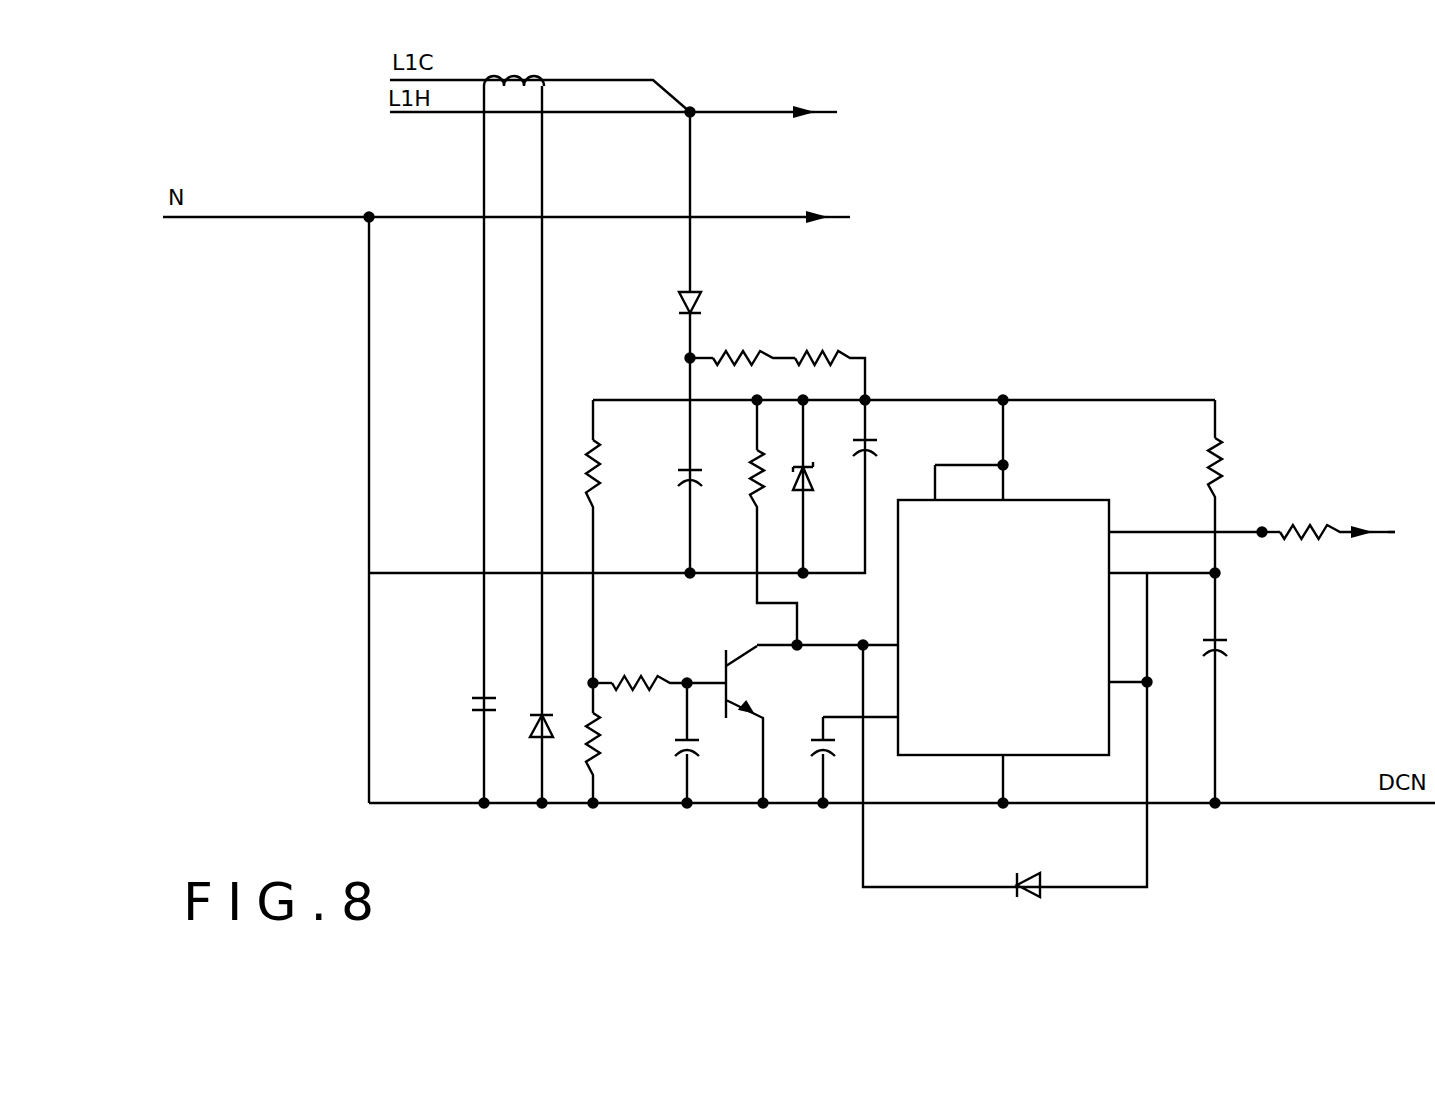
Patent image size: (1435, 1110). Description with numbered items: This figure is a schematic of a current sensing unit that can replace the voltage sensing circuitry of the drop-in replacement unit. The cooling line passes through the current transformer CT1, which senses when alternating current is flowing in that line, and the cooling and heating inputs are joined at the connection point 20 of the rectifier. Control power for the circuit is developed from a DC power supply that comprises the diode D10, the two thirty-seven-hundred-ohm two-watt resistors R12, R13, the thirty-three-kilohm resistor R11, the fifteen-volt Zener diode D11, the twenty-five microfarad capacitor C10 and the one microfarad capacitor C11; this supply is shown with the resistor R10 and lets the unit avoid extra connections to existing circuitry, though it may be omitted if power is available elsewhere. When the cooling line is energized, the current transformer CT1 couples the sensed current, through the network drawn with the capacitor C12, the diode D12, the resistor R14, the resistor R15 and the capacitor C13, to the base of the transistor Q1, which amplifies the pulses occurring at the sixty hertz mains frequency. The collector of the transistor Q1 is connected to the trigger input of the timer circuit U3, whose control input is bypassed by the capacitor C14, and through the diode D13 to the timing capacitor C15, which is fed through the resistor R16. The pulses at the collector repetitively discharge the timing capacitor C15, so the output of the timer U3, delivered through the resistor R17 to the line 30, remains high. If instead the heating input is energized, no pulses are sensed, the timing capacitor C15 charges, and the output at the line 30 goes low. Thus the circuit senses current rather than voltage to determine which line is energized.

The input 20 is at (709, 189).
The line 30 is at (1408, 532).
The current transformer CT1 is at (531, 64).
The diode D10 is at (647, 427).
The resistor R12 is at (742, 354).
The resistor R13 is at (830, 355).
The resistor R10 is at (572, 541).
The capacitor C10 is at (662, 485).
The resistor R11 is at (752, 522).
The Zener diode D11 is at (824, 486).
The capacitor C11 is at (890, 440).
The 555 timer U3 is at (1009, 601).
The resistor R16 is at (1247, 601).
The resistor R17 is at (1328, 532).
The timing capacitor C15 is at (1248, 652).
The capacitor C12 is at (457, 695).
The diode D12 is at (523, 820).
The resistor R15 is at (619, 743).
The resistor R14 is at (640, 657).
The transistor Q1 is at (735, 710).
The capacitor C13 is at (710, 743).
The capacitor C14 is at (805, 759).
The diode D13 is at (1005, 754).